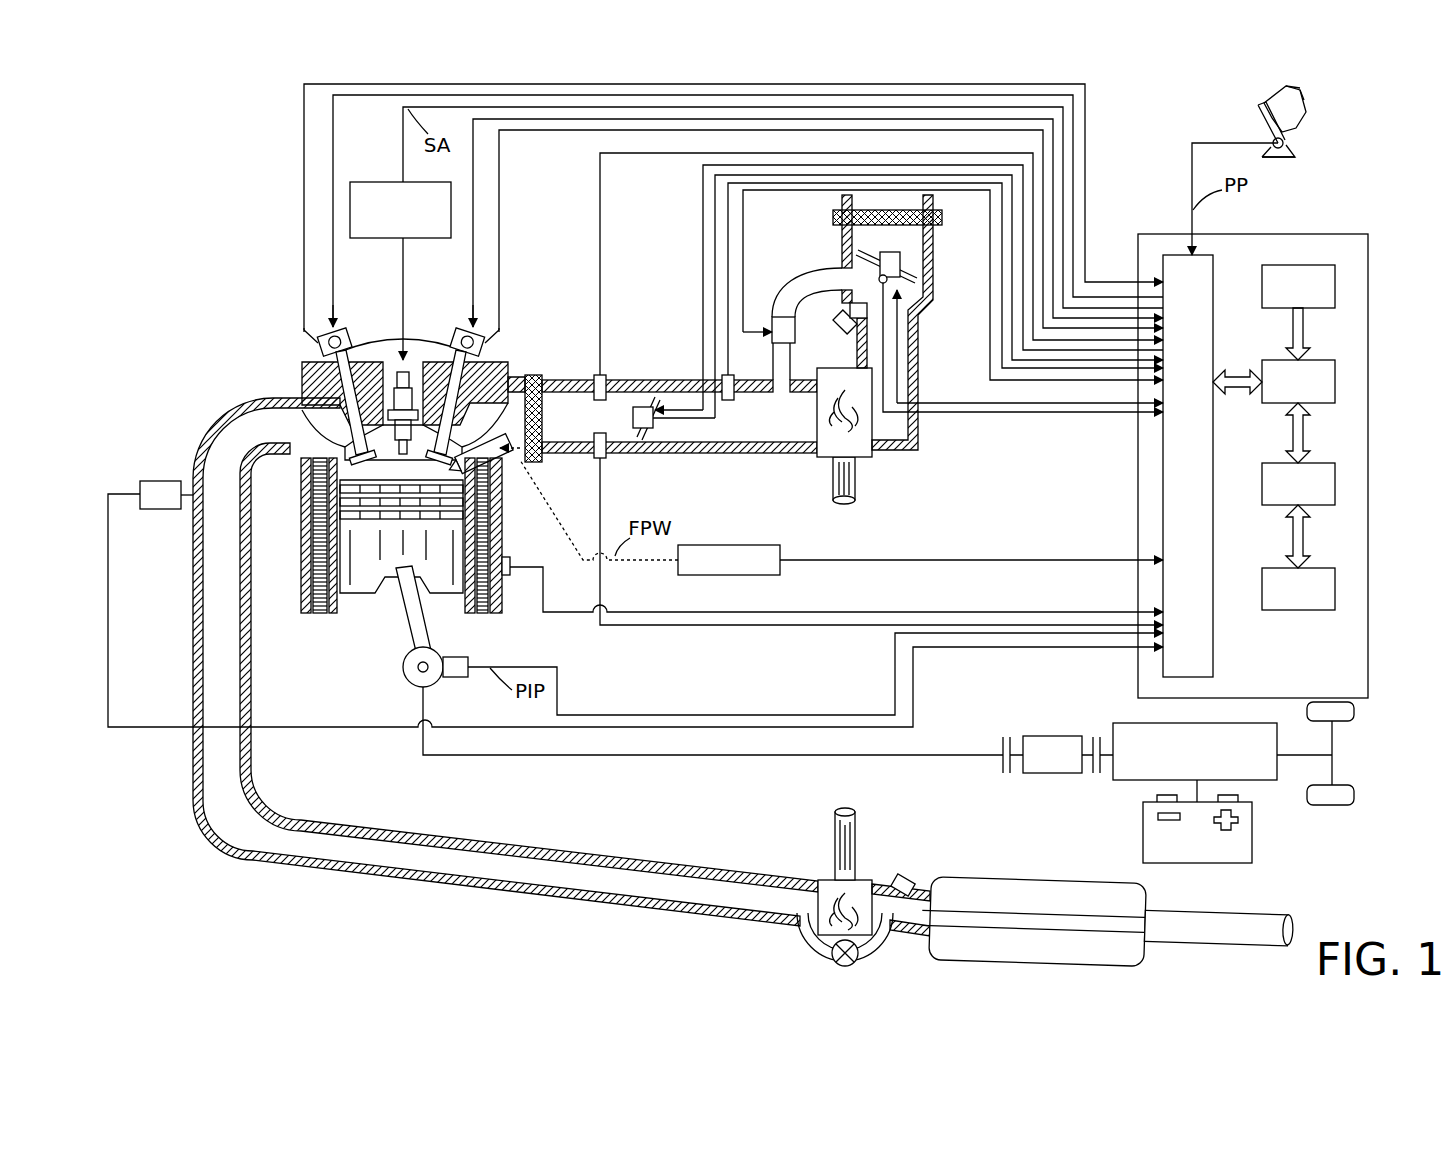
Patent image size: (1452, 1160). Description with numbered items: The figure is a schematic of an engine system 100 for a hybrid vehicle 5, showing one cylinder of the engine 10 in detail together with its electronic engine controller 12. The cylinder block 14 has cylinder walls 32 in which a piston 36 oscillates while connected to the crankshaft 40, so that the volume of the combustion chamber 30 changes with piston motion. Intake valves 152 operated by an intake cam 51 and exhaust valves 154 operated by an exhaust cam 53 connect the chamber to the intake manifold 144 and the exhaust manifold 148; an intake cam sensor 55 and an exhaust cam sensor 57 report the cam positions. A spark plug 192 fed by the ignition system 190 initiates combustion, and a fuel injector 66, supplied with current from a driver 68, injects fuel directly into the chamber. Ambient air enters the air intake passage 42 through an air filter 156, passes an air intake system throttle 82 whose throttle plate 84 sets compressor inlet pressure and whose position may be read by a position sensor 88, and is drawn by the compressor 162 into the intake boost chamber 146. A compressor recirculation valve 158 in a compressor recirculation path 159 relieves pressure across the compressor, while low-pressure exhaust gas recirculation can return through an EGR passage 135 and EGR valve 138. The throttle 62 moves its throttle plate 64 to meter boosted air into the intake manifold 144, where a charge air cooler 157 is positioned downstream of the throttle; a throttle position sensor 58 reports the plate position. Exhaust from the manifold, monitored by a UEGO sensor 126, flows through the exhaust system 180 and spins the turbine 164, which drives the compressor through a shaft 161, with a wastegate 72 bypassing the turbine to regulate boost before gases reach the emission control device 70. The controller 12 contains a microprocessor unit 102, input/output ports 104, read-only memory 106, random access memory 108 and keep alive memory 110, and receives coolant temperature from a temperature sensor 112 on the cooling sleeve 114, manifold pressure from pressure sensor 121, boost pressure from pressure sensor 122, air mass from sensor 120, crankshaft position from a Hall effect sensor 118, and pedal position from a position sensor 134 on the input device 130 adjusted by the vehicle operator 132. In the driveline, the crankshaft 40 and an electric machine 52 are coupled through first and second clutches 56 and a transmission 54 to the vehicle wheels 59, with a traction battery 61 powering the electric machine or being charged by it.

The engine system 100 is at (153, 147).
The engine 10 is at (232, 302).
The electronic engine controller 12 is at (1360, 234).
The vehicle 5 is at (1382, 740).
The cylinder block 14 is at (296, 512).
The combustion chamber 30 is at (320, 565).
The cylinder walls 32 is at (345, 600).
The piston 36 is at (385, 570).
The crankshaft 40 is at (410, 685).
The air intake passage 42 is at (880, 250).
The intake cam 51 is at (462, 330).
The exhaust cam 53 is at (342, 330).
The intake cam sensor 55 is at (486, 345).
The exhaust cam sensor 57 is at (318, 348).
The electric machine 52 is at (1050, 774).
The transmission 54 is at (1255, 780).
The clutch 56 is at (1003, 740).
The throttle position sensor 58 is at (653, 428).
The vehicle wheels 59 is at (1335, 805).
The traction battery 61 is at (1195, 864).
The throttle 62 is at (654, 396).
The throttle plate 64 is at (656, 400).
The fuel injector 66 is at (500, 462).
The driver 68 is at (760, 546).
The emission control device 70 is at (932, 950).
The wastegate 72 is at (830, 957).
The air intake system throttle 82 is at (858, 264).
The throttle plate 84 is at (846, 240).
The position sensor 88 is at (878, 268).
The microprocessor unit 102 is at (1335, 378).
The input/output ports 104 is at (1215, 262).
The read-only memory 106 is at (1335, 282).
The random access memory 108 is at (1335, 482).
The keep alive memory 110 is at (1335, 587).
The temperature sensor 112 is at (512, 565).
The cooling sleeve 114 is at (500, 600).
The Hall effect sensor 118 is at (450, 678).
The air mass sensor 120 is at (605, 460).
The pressure sensor 121 is at (603, 374).
The pressure sensor 122 is at (730, 380).
The UEGO sensor 126 is at (140, 484).
The input device 130 is at (1268, 130).
The vehicle operator 132 is at (1306, 102).
The position sensor 134 is at (1292, 152).
The EGR passage 135 is at (898, 890).
The EGR valve 138 is at (850, 310).
The intake manifold 144 is at (560, 430).
The intake boost chamber 146 is at (723, 430).
The exhaust manifold 148 is at (258, 438).
The intake valves 152 is at (498, 429).
The exhaust valves 154 is at (302, 397).
The air filter 156 is at (942, 217).
The charge air cooler 157 is at (542, 450).
The compressor recirculation valve 158 is at (772, 318).
The compressor recirculation path 159 is at (790, 370).
The shaft 161 is at (858, 825).
The compressor 162 is at (872, 452).
The turbine 164 is at (824, 880).
The exhaust system 180 is at (448, 905).
The ignition system 190 is at (392, 183).
The spark plug 192 is at (406, 365).